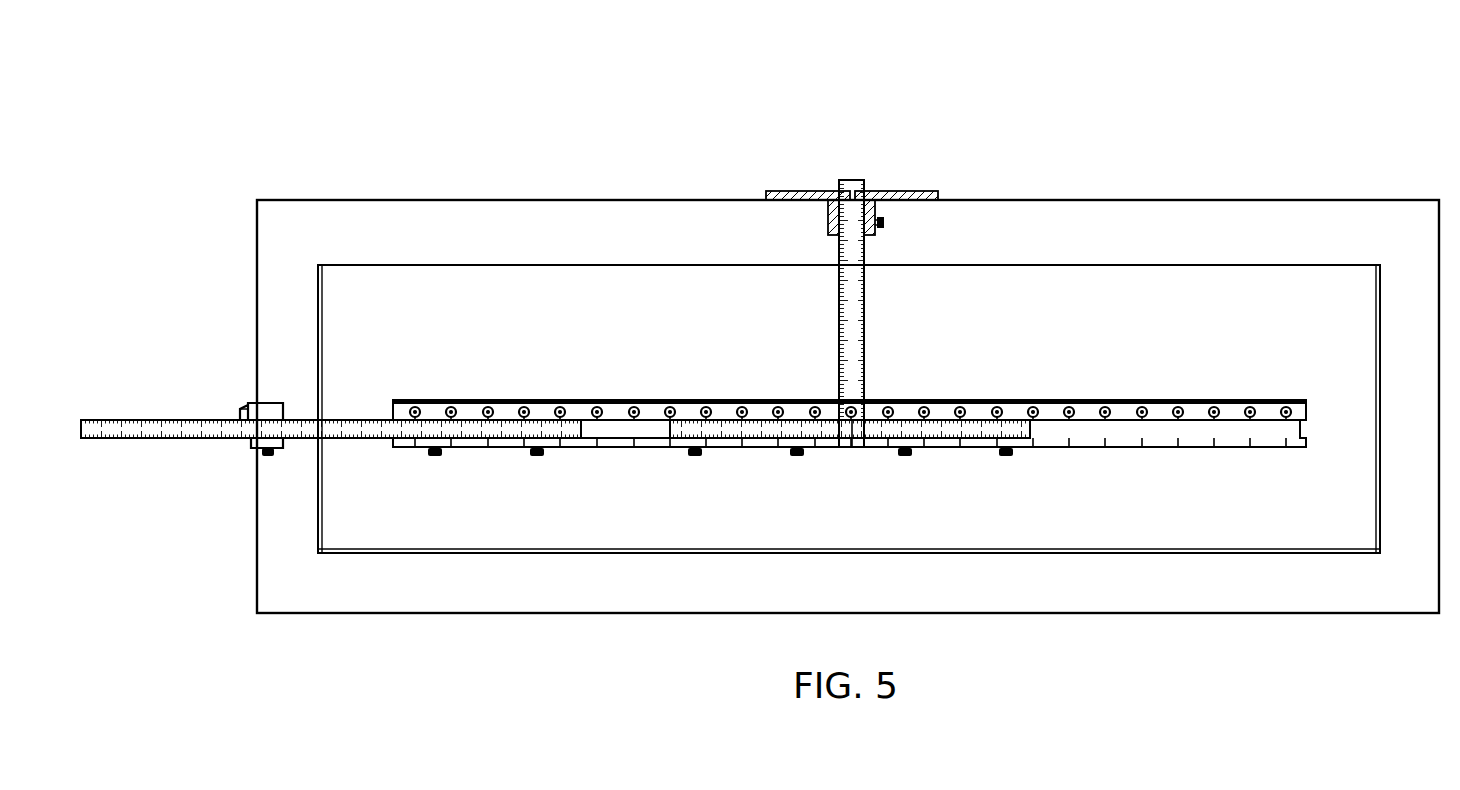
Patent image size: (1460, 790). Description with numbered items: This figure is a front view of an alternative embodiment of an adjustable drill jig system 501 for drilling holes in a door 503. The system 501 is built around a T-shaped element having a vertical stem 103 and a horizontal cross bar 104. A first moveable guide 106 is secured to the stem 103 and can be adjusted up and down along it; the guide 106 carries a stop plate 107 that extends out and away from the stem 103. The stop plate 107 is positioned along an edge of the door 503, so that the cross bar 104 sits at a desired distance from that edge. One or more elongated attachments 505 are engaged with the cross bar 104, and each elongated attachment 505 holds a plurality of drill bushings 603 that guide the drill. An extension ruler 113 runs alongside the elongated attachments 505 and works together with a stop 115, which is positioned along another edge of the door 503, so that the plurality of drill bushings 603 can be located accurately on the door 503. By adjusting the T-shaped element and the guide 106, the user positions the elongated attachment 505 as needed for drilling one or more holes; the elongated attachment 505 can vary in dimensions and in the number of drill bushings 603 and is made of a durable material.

The adjustable drill jig system 501 is at (1160, 90).
The door 503 is at (257, 252).
The elongated attachment 505 is at (583, 398).
The extension ruler 113 is at (172, 418).
The drill bushing 603 is at (670, 398).
The stop 115 is at (276, 403).
The stem 103 is at (838, 313).
The cross bar 104 is at (852, 448).
The first moveable guide 106 is at (829, 225).
The stop plate 107 is at (799, 190).